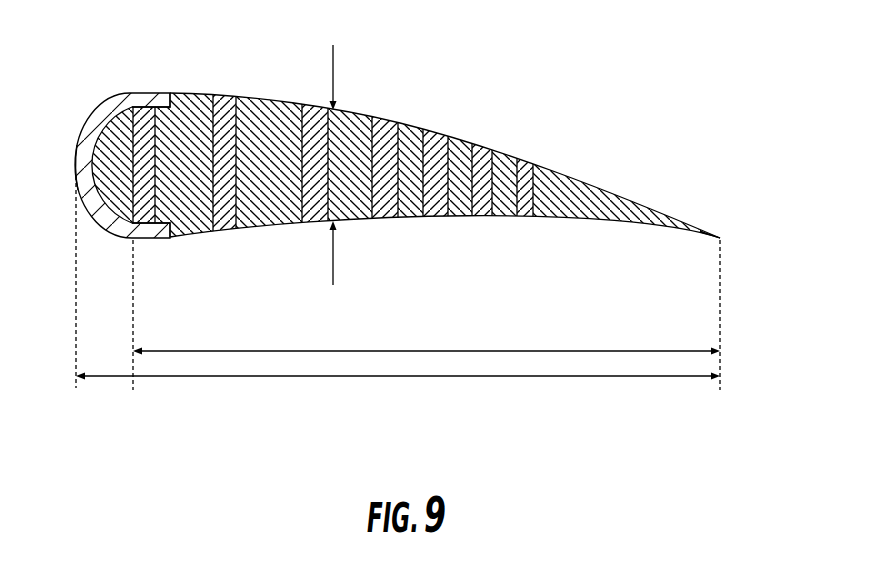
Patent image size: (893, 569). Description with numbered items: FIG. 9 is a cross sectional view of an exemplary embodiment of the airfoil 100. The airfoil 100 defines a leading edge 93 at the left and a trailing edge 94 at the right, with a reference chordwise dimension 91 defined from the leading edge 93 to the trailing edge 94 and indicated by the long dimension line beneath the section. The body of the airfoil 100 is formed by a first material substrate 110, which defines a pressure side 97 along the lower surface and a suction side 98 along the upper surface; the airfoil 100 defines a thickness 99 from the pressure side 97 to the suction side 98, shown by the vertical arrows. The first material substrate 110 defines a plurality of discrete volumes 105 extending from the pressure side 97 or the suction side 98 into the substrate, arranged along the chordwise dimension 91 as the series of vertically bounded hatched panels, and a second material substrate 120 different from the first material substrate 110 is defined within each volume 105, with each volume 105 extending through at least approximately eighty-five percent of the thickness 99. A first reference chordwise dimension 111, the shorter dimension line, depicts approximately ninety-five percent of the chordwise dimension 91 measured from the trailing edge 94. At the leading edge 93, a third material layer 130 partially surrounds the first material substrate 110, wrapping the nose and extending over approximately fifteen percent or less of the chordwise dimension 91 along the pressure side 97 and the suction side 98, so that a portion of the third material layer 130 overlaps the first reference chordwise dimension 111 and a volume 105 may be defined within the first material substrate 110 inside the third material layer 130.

The reference chordwise dimension 91 is at (428, 378).
The leading edge 93 is at (70, 175).
The trailing edge 94 is at (724, 227).
The pressure side 97 is at (187, 246).
The suction side 98 is at (190, 90).
The thickness 99 is at (336, 265).
The airfoil 100 is at (409, 159).
The discrete volume 105 is at (315, 165).
The first material substrate 110 is at (350, 165).
The first reference chordwise dimension 111 is at (500, 350).
The second material substrate 120 is at (224, 165).
The third material layer 130 is at (108, 107).